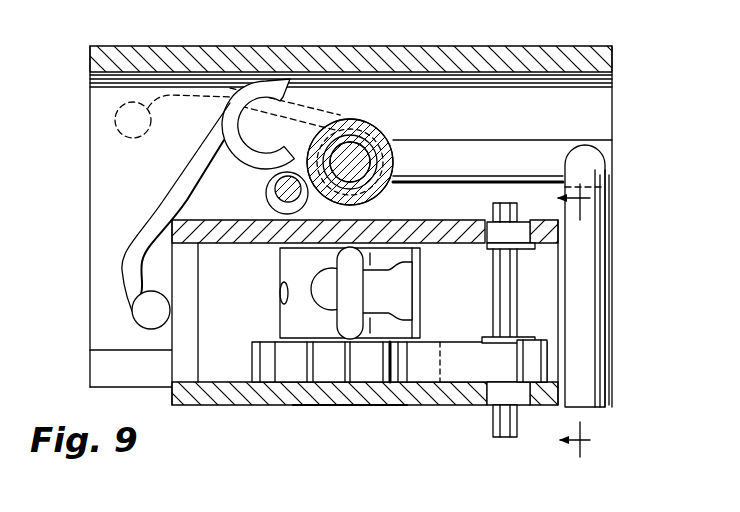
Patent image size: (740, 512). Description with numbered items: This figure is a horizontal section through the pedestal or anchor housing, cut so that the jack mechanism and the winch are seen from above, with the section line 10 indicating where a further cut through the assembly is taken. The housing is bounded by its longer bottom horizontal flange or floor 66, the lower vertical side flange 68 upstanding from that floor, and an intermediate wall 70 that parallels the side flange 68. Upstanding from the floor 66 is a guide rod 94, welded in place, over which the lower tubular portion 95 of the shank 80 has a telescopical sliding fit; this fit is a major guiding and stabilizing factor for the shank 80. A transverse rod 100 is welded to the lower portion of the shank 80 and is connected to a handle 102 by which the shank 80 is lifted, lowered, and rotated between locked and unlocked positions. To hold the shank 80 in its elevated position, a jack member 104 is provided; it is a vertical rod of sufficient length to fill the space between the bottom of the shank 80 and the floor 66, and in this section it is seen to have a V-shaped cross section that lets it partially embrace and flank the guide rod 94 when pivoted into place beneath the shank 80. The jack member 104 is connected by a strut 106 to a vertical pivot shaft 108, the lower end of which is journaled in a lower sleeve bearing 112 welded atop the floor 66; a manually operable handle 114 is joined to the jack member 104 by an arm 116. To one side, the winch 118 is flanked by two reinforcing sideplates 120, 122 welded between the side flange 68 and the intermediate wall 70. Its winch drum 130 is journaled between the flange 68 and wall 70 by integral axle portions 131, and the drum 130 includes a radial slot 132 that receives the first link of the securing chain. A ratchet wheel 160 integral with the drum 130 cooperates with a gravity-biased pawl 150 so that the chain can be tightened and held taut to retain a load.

The section line 10- 10 is at (558, 326).
The bottom horizontal flange 66 is at (597, 112).
The lower vertical side flange 68 is at (233, 404).
The intermediate wall 70 is at (457, 243).
The shank 80 is at (377, 193).
The guide rod 94 is at (367, 148).
The shank lower tubular portion 95 is at (380, 168).
The transverse rod 100 is at (517, 167).
The handle 102 is at (610, 338).
The jack member 104 is at (270, 78).
The strut 106 is at (277, 170).
The vertical pivot shaft 108 is at (272, 187).
The lower sleeve bearing 112 is at (267, 202).
The handle 114 is at (140, 316).
The arm 116 is at (150, 224).
The winch 118 is at (276, 315).
The reinforcing sideplate 120 is at (547, 308).
The reinforcing sideplate 122 is at (173, 360).
The winch drum 130 is at (281, 281).
The axle portions 131 is at (293, 394).
The radial slot 132 is at (340, 254).
The pawl 150 is at (488, 372).
The ratchet wheel 160 is at (360, 363).